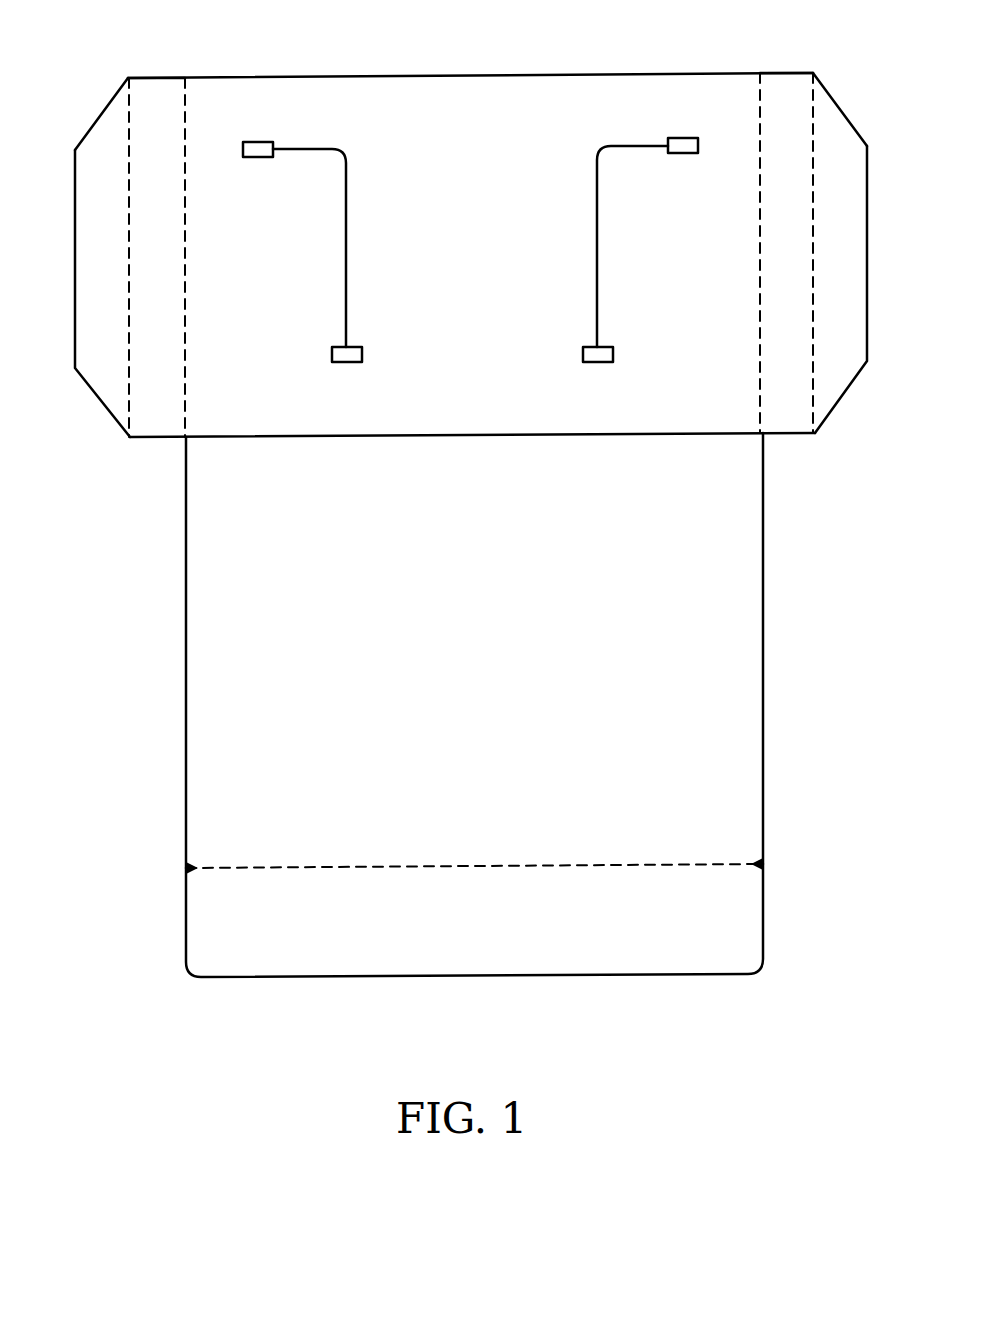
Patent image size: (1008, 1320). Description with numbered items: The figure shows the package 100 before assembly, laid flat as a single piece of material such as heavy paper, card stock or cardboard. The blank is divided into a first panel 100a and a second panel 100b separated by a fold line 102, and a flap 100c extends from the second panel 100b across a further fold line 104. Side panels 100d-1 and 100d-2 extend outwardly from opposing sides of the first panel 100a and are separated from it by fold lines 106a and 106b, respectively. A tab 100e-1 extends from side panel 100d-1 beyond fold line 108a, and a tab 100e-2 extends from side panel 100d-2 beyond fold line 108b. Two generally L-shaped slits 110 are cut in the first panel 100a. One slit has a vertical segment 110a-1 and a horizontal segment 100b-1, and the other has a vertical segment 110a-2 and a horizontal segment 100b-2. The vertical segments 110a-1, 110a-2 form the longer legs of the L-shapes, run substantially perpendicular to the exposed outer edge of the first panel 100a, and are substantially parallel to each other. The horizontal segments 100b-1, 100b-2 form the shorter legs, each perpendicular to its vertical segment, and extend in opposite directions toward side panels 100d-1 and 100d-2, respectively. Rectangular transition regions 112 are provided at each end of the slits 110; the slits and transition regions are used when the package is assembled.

The package 100 is at (122, 648).
The first panel 100a is at (457, 78).
The second panel 100b is at (738, 692).
The flap 100c is at (750, 932).
The side panel 100d-1 is at (773, 74).
The side panel 100d-2 is at (152, 78).
The tab 100e-1 is at (832, 115).
The tab 100e-2 is at (113, 118).
The horizontal segment 100b-1 is at (643, 146).
The horizontal segment 100b-2 is at (305, 147).
The fold line 102 is at (429, 432).
The fold line 104 is at (412, 862).
The fold line 106a is at (758, 258).
The fold line 106b is at (186, 328).
The fold line 108a is at (814, 280).
The fold line 108b is at (128, 265).
The slit 110 is at (587, 215).
The vertical segment 110a-1 is at (593, 237).
The vertical segment 110a-2 is at (347, 233).
The rectangular transition region 112 is at (248, 146).